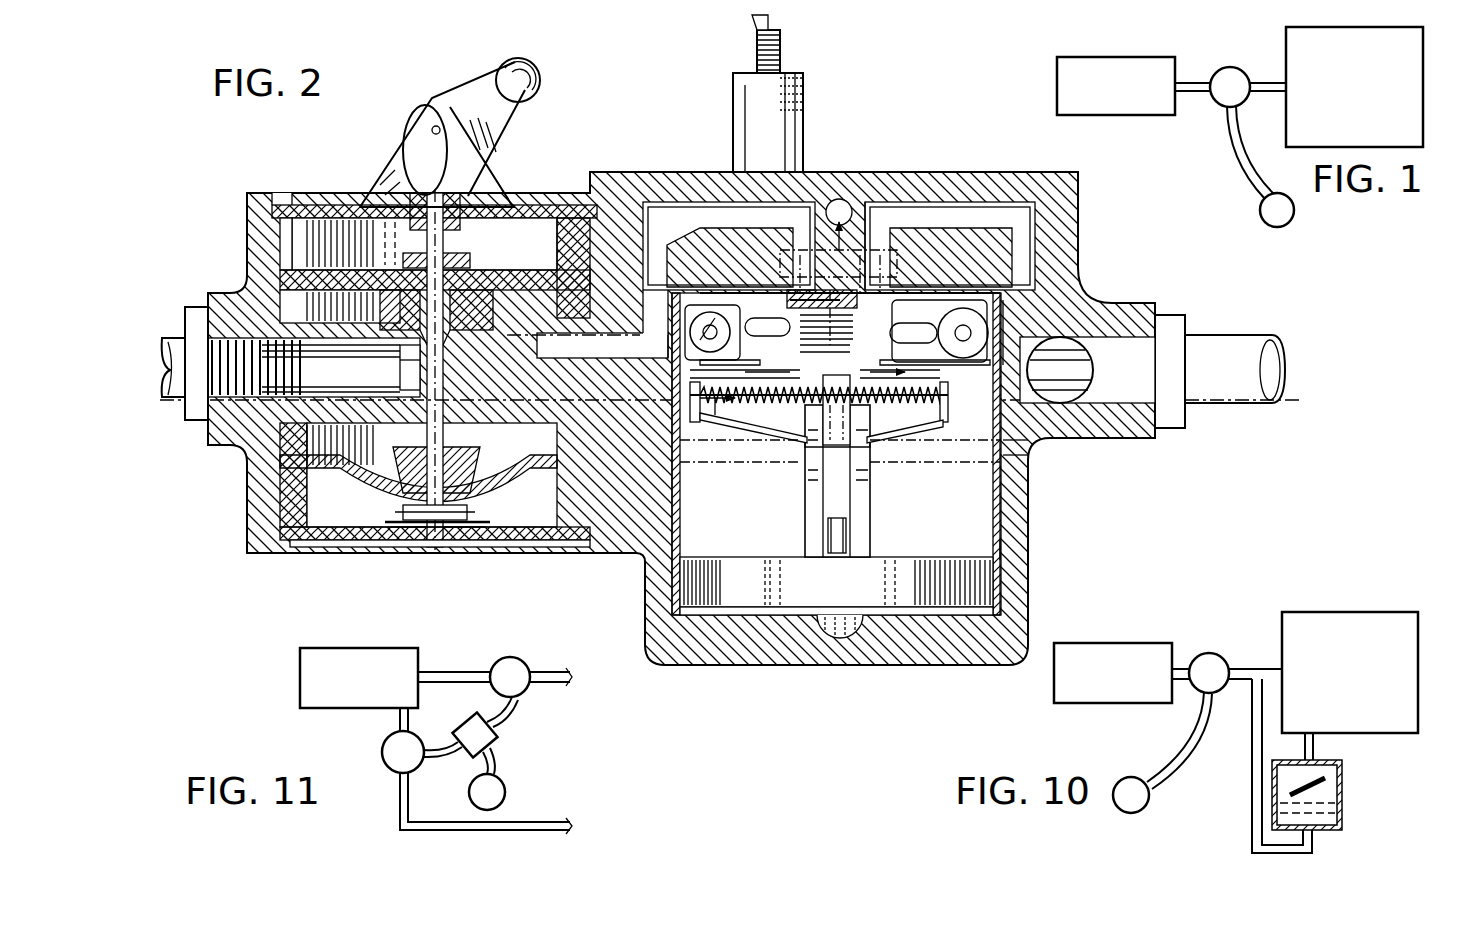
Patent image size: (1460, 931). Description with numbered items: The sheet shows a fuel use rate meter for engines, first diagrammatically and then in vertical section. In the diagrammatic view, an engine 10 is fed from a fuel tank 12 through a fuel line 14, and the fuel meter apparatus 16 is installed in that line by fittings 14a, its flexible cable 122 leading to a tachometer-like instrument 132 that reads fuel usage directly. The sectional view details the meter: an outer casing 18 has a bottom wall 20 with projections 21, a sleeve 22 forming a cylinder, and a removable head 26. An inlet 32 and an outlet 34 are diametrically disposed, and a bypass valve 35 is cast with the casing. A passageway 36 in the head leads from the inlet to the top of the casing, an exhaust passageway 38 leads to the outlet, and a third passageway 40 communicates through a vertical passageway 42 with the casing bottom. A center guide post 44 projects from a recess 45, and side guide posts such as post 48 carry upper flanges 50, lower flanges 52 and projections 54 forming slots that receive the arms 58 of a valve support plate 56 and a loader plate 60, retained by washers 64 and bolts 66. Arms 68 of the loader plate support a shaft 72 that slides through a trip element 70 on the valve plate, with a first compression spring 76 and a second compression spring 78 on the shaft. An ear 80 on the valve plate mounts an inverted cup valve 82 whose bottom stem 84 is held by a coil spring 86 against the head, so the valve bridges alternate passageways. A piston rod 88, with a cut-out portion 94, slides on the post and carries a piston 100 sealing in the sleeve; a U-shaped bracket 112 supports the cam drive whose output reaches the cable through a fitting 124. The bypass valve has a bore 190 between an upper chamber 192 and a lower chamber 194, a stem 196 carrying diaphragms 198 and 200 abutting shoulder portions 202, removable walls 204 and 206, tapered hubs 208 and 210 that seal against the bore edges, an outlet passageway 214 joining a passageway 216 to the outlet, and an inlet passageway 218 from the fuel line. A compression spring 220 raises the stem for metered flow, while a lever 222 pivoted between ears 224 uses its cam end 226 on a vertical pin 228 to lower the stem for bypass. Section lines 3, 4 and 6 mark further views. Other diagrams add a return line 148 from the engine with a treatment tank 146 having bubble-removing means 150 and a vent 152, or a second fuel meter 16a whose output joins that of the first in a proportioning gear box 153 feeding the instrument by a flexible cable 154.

In FIG. 1, the engine 10 is at (1294, 46).
In FIG. 10, the engine 10 is at (1343, 620).
In FIG. 1, the fuel tank 12 is at (1118, 66).
In FIG. 10, the fuel tank 12 is at (1152, 642).
In FIG. 11, the fuel tank 12 is at (365, 660).
In FIG. 2, the fuel line 14 is at (178, 335).
In FIG. 1, the fuel line 14 is at (1265, 85).
In FIG. 10, the fuel line 14 is at (1243, 668).
In FIG. 11, the fuel line 14 is at (460, 680).
In FIG. 2, the fittings 14a is at (197, 312).
In FIG. 2, the fuel meter apparatus 16 is at (1033, 520).
In FIG. 1, the fuel meter apparatus 16 is at (1220, 72).
In FIG. 10, the fuel meter apparatus 16 is at (1205, 658).
In FIG. 11, the fuel meter apparatus 16 is at (520, 665).
In FIG. 11, the second fuel meter 16a is at (388, 762).
In FIG. 2, the outer casing 18 is at (1018, 497).
In FIG. 2, the bottom wall 20 is at (933, 660).
In FIG. 2, the projections 21 is at (752, 612).
In FIG. 2, the sleeve 22 is at (1000, 542).
In FIG. 2, the head 26 is at (642, 182).
In FIG. 2, the inlet 32 is at (540, 325).
In FIG. 2, the outlet 34 is at (1105, 345).
In FIG. 2, the bypass valve 35 is at (262, 527).
In FIG. 2, the passageway 36 is at (735, 212).
In FIG. 2, the passageway 38 is at (945, 215).
In FIG. 2, the third passageway 40 is at (840, 250).
In FIG. 2, the vertical passageway 42 is at (846, 632).
In FIG. 2, the center guide post 44 is at (826, 425).
In FIG. 2, the recess 45 is at (890, 240).
In FIG. 2, the guide post 48 is at (1010, 300).
In FIG. 2, the upper flanges 50 is at (705, 300).
In FIG. 2, the lower flanges 52 is at (1042, 463).
In FIG. 2, the central horizontal projection 54 is at (960, 330).
In FIG. 2, the valve support plate 56 is at (905, 371).
In FIG. 2, the arms 58 is at (943, 371).
In FIG. 2, the loader plate 60 is at (728, 405).
In FIG. 2, the washers 64 is at (712, 300).
In FIG. 2, the bolts 66 is at (725, 300).
In FIG. 2, the arms 68 is at (690, 415).
In FIG. 2, the trip element 70 is at (800, 430).
In FIG. 2, the shaft 72 is at (1031, 453).
In FIG. 2, the first compression spring 76 is at (718, 405).
In FIG. 2, the second compression spring 78 is at (935, 428).
In FIG. 2, the ear 80 is at (821, 331).
In FIG. 2, the inverted cup valve 82 is at (875, 250).
In FIG. 2, the bottom stem 84 is at (790, 312).
In FIG. 2, the coil spring 86 is at (805, 356).
In FIG. 2, the piston rod 88 is at (812, 495).
In FIG. 2, the cut-out portion 94 is at (828, 522).
In FIG. 2, the piston 100 is at (975, 590).
In FIG. 2, the U-shaped bracket 112 is at (895, 445).
In FIG. 2, the flexible cable 122 is at (768, 25).
In FIG. 1, the flexible cable 122 is at (1235, 157).
In FIG. 10, the flexible cable 122 is at (1195, 738).
In FIG. 11, the flexible cable 122 is at (440, 745).
In FIG. 2, the fitting 124 is at (800, 112).
In FIG. 1, the tachometer-like instrument 132 is at (1265, 218).
In FIG. 10, the tachometer-like instrument 132 is at (1140, 810).
In FIG. 11, the tachometer-like instrument 132 is at (503, 798).
In FIG. 10, the treatment tank 146 is at (1338, 808).
In FIG. 10, the return line 148 is at (1253, 790).
In FIG. 11, the return line 148 is at (515, 813).
In FIG. 10, the means for removing air bubbles 150 is at (1325, 781).
In FIG. 10, the vent 152 is at (1282, 762).
In FIG. 11, the proportioning gear box 153 is at (490, 738).
In FIG. 11, the flexible cable 154 is at (494, 762).
In FIG. 2, the bore 190 is at (405, 362).
In FIG. 2, the upper chamber 192 is at (507, 268).
In FIG. 2, the lower chamber 194 is at (310, 445).
In FIG. 2, the stem 196 is at (436, 497).
In FIG. 2, the diaphragm 198 is at (283, 280).
In FIG. 2, the diaphragm 200 is at (330, 468).
In FIG. 2, the shoulder portions 202 is at (283, 262).
In FIG. 2, the removable wall 204 is at (340, 212).
In FIG. 2, the removable wall 206 is at (538, 535).
In FIG. 2, the tapered hub 208 is at (465, 295).
In FIG. 2, the tapered hub 210 is at (400, 500).
In FIG. 2, the outlet passageway 214 is at (454, 462).
In FIG. 2, the passageway 216 is at (1125, 445).
In FIG. 2, the inlet passageway 218 is at (305, 386).
In FIG. 2, the compression spring 220 is at (475, 505).
In FIG. 2, the lever 222 is at (512, 68).
In FIG. 2, the ears 224 is at (470, 172).
In FIG. 2, the cam end 226 is at (405, 165).
In FIG. 2, the vertical pin 228 is at (458, 185).
In FIG. 2, the section line 3 is at (173, 368).
In FIG. 2, the section line 4 is at (608, 436).
In FIG. 2, the section line 6 is at (839, 160).